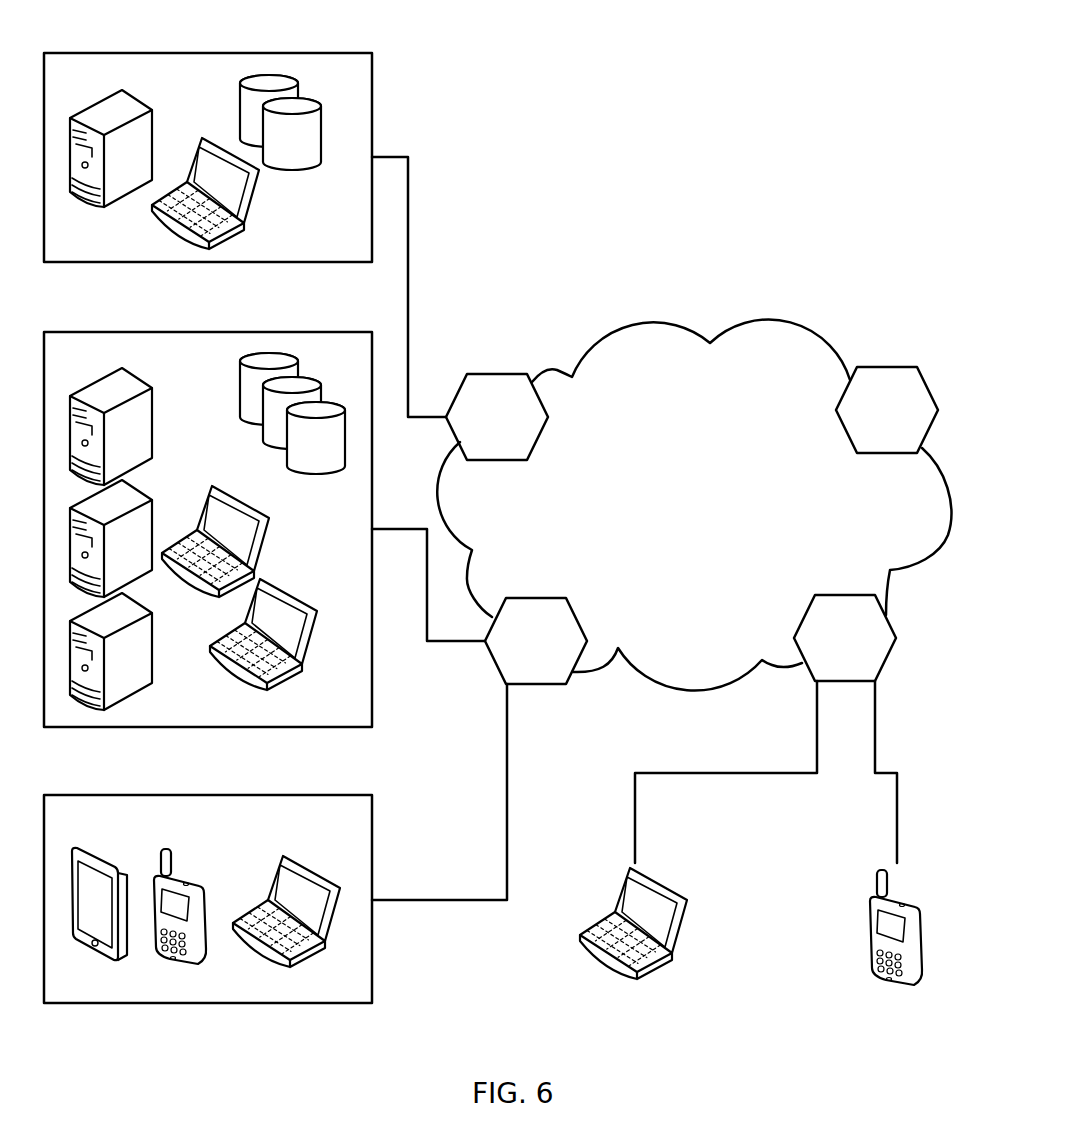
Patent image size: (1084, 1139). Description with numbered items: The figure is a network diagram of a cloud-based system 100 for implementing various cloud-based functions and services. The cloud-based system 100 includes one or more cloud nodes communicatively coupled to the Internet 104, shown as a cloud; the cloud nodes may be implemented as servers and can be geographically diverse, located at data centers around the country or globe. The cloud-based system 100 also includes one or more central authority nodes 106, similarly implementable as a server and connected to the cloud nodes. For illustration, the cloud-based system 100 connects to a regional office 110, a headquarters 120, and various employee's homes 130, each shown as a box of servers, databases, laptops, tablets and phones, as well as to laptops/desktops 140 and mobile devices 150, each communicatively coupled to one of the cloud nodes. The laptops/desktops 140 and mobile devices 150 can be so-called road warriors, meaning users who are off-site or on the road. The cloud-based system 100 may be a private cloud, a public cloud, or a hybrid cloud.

The cloud-based system 100 is at (724, 95).
The Internet 104 is at (825, 333).
The central authority node 106 is at (895, 367).
The regional office 110 is at (280, 53).
The headquarters 120 is at (285, 332).
The employee's home 130 is at (290, 795).
The laptop/desktop 140 is at (687, 898).
The mobile device 150 is at (865, 918).